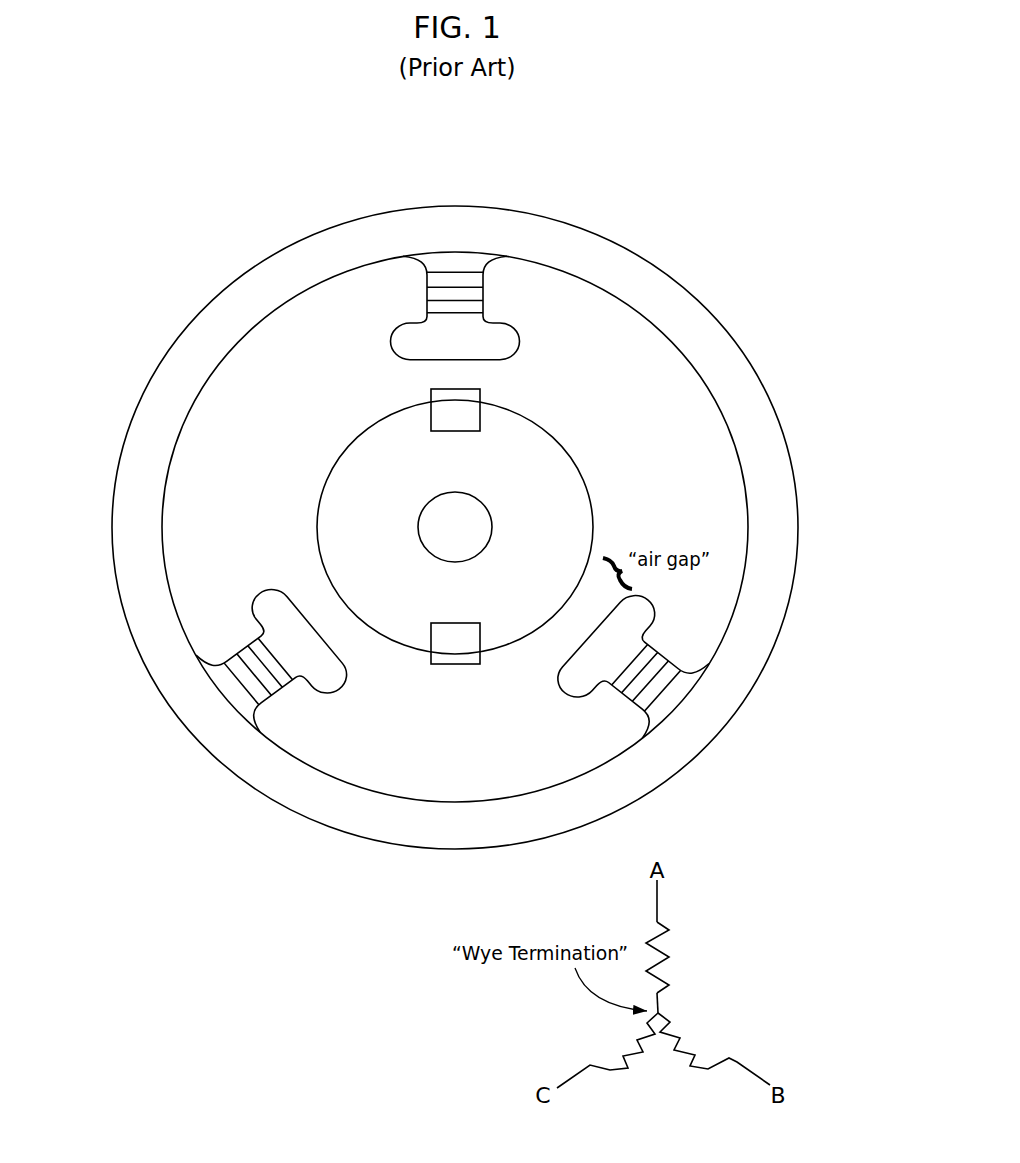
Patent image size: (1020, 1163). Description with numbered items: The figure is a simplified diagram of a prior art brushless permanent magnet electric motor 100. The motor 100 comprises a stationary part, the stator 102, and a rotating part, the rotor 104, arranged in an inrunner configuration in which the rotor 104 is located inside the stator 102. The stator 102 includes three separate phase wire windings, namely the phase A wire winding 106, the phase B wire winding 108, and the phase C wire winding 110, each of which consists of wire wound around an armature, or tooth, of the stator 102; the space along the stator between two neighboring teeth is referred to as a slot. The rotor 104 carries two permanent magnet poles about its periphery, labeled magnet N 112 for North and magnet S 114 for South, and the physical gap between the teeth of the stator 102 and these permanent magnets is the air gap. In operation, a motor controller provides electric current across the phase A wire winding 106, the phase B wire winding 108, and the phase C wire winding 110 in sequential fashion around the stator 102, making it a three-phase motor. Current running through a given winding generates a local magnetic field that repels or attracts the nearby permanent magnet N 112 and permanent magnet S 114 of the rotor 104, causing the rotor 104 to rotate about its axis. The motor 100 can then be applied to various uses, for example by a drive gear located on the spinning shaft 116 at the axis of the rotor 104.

The motor 100 is at (175, 205).
The stator 102 is at (357, 222).
The rotor 104 is at (355, 435).
The phase A wire winding 106 is at (455, 250).
The phase B wire winding 108 is at (673, 720).
The phase C wire winding 110 is at (221, 698).
The magnet N 112 is at (483, 391).
The magnet S 114 is at (431, 656).
The shaft 116 is at (493, 517).